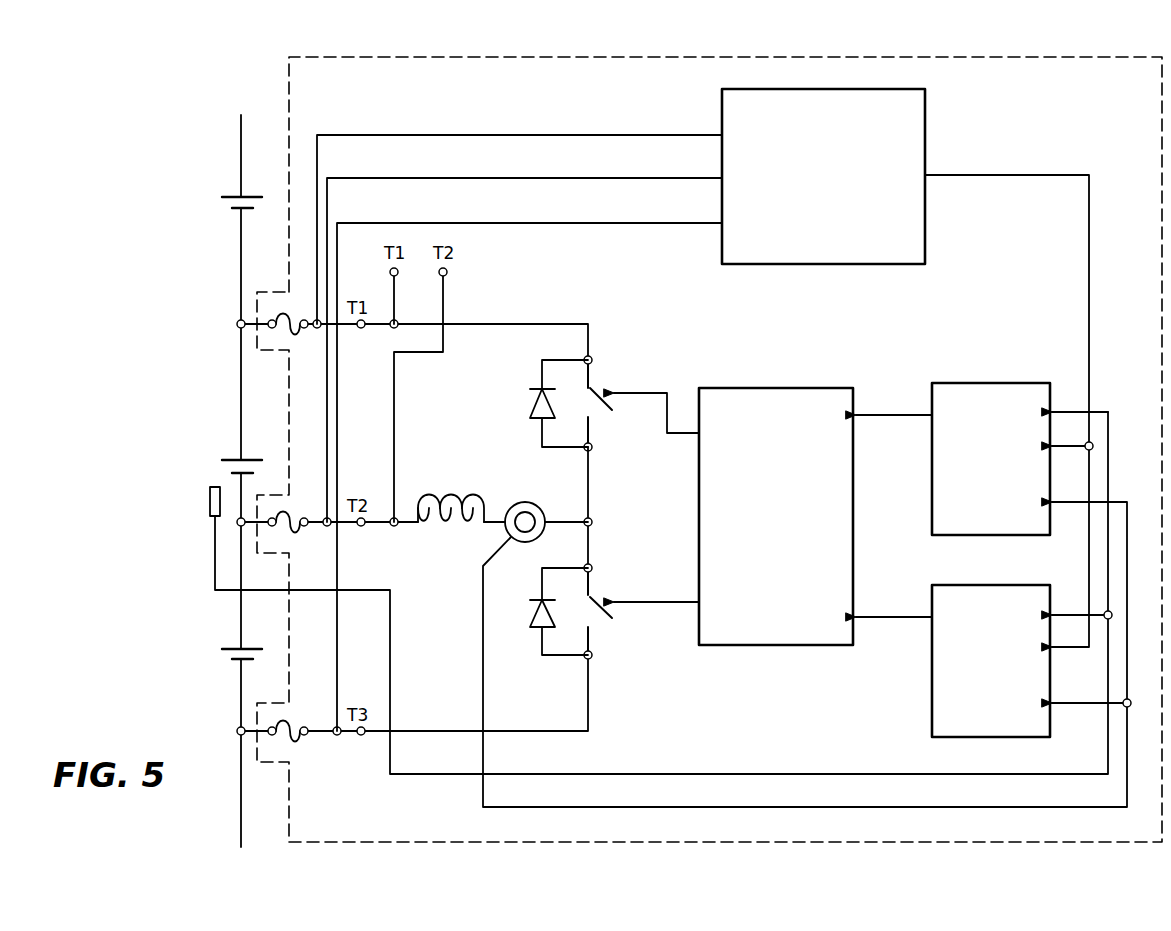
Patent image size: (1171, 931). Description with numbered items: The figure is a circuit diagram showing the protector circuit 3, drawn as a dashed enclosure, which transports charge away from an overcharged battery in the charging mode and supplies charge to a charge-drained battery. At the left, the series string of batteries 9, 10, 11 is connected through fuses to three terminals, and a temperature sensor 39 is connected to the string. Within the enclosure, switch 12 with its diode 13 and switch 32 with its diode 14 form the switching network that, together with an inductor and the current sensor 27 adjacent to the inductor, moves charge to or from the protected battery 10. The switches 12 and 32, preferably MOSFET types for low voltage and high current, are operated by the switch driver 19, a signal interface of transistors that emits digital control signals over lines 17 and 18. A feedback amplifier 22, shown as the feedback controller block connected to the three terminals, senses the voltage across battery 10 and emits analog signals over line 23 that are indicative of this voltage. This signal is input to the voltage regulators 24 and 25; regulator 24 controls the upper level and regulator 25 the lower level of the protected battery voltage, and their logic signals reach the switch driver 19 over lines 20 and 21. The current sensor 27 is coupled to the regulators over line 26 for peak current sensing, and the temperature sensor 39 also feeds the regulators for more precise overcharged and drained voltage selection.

The protector circuit 3 is at (352, 842).
The battery 9 is at (253, 196).
The battery 10 is at (253, 459).
The battery 11 is at (253, 648).
The switch 12 is at (600, 390).
The diode 13 is at (530, 402).
The diode 14 is at (530, 613).
The control line 17 is at (687, 431).
The control line 18 is at (678, 606).
The switch driver 19 is at (699, 490).
The line 20 is at (882, 413).
The line 21 is at (882, 615).
The feedback amplifier 22 is at (807, 268).
The line 23 is at (975, 174).
The voltage regulator 24 is at (932, 455).
The voltage regulator 25 is at (962, 683).
The line 26 is at (1030, 806).
The current sensor 27 is at (525, 501).
The switch 32 is at (600, 620).
The temperature sensor 39 is at (215, 486).